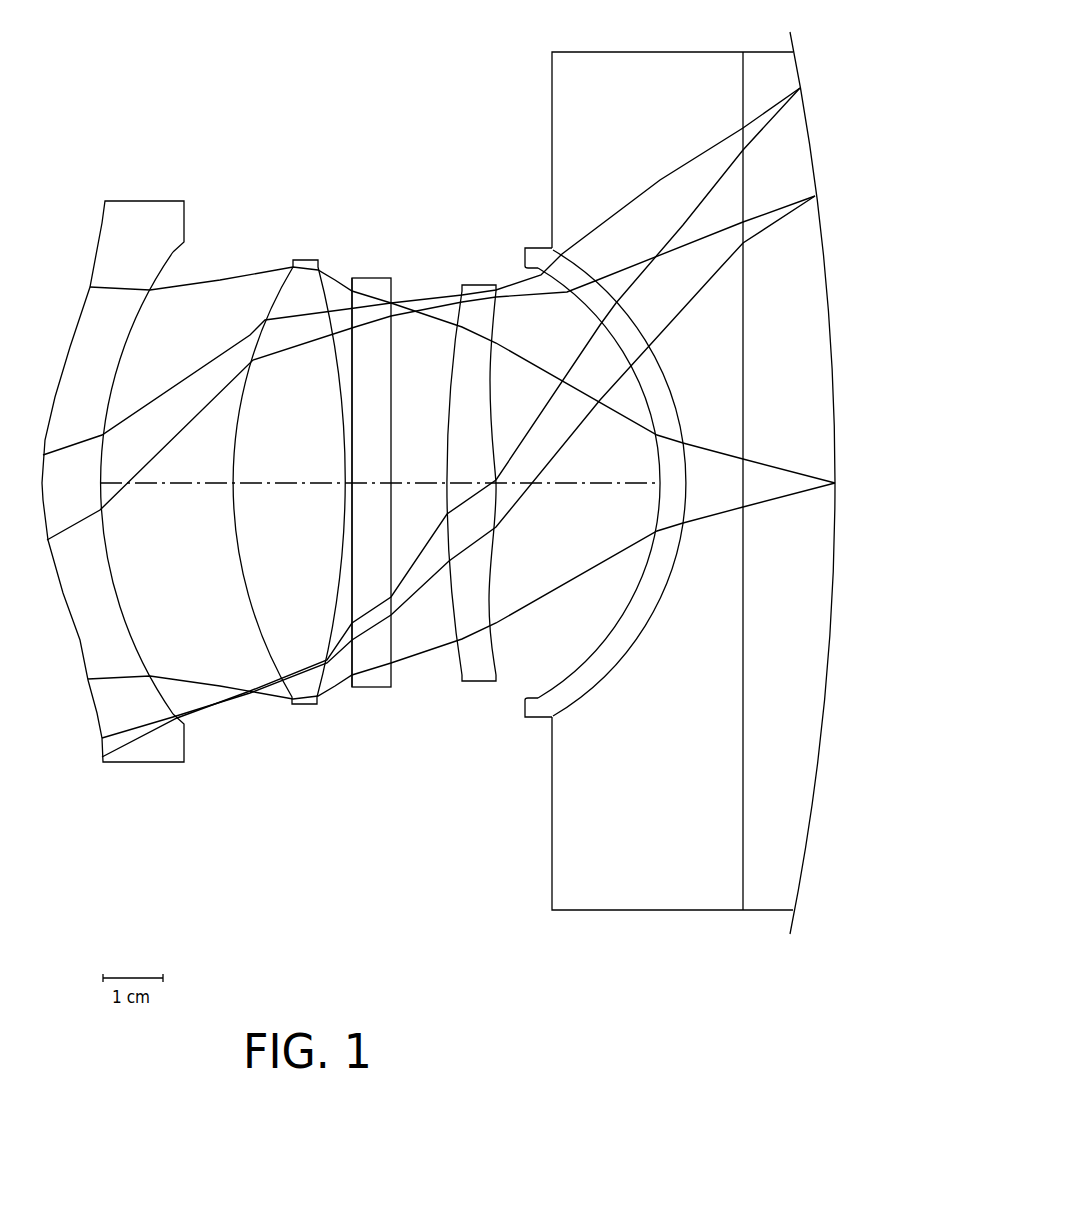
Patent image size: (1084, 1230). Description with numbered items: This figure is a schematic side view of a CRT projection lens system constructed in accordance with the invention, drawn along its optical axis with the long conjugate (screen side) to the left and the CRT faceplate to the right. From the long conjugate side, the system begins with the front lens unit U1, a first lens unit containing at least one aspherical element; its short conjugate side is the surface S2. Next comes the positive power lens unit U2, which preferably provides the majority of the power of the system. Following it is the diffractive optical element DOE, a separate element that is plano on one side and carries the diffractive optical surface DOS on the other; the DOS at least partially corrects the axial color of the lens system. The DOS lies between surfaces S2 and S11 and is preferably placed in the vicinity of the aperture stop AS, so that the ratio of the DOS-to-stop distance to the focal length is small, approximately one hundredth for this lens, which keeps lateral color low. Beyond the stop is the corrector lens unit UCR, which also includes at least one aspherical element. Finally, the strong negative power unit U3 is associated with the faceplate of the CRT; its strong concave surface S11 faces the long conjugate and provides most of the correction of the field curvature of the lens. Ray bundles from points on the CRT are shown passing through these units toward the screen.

The front lens unit U1 is at (117, 532).
The positive power lens unit U2 is at (280, 709).
The strong negative power unit U3 is at (718, 518).
The corrector lens unit UCR is at (447, 686).
The diffractive optical element DOE is at (332, 438).
The diffractive optical surface DOS is at (292, 438).
The short conjugate side surface of the front lens unit S2 is at (116, 591).
The strong concave surface of the strong negative power unit S11 is at (658, 508).
The element CRT is at (804, 705).
The aperture stop AS is at (337, 740).